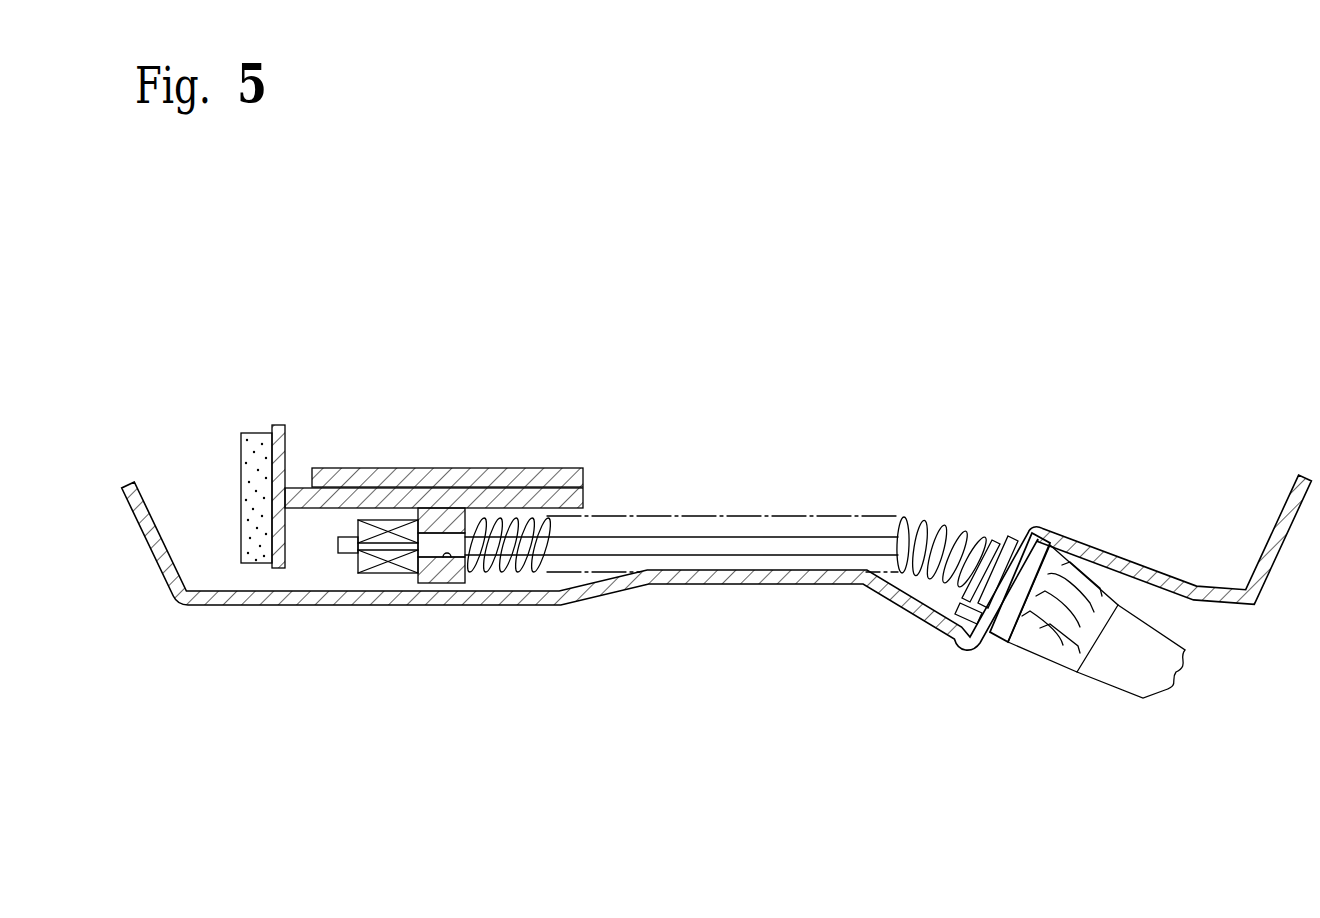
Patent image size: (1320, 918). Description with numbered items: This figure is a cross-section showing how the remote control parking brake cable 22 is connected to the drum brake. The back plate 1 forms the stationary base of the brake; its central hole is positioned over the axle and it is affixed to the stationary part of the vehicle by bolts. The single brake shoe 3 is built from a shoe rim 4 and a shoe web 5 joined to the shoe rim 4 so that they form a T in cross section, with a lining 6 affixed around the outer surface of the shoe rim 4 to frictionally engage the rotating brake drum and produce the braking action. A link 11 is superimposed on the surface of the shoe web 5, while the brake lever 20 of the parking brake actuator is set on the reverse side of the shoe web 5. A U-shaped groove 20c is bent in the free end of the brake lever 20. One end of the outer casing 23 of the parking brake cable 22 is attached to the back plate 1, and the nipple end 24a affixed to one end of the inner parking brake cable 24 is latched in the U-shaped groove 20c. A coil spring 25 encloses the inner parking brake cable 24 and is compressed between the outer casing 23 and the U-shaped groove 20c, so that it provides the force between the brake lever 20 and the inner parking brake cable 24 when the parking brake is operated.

The back plate 1 is at (745, 585).
The brake shoe 3 is at (244, 440).
The shoe rim 4 is at (288, 456).
The shoe web 5 is at (298, 492).
The lining 6 is at (240, 473).
The link 11 is at (510, 467).
The brake lever 20 is at (427, 510).
The U-shaped groove 20c is at (452, 560).
The remote control parking brake cable 22 is at (1043, 658).
The outer casing 23 is at (1122, 680).
The inner parking brake cable 24 is at (821, 545).
The nipple end 24a is at (377, 574).
The coil spring 25 is at (918, 527).